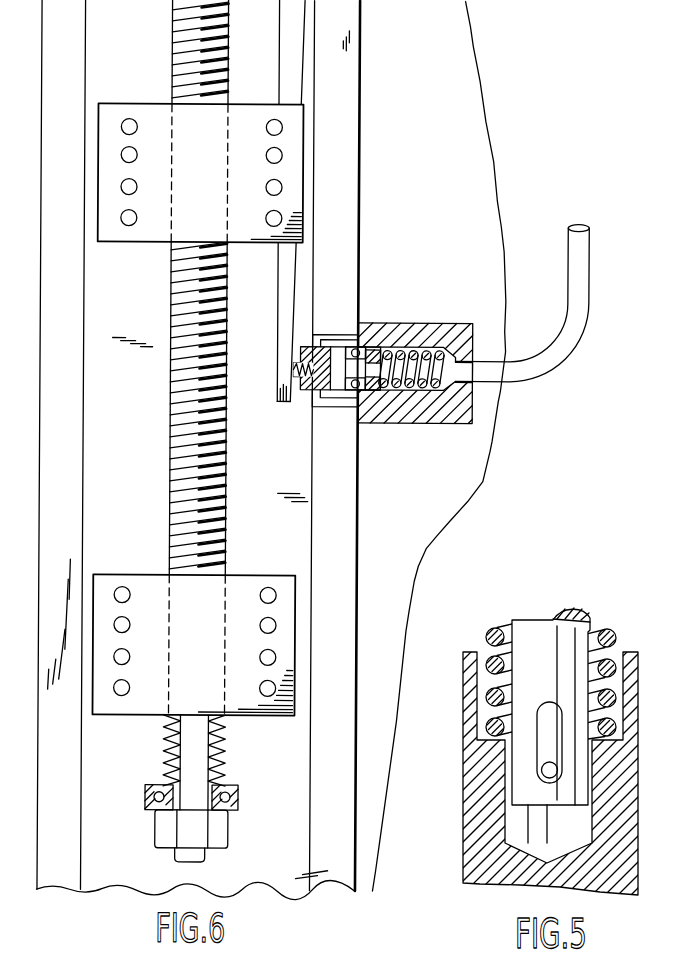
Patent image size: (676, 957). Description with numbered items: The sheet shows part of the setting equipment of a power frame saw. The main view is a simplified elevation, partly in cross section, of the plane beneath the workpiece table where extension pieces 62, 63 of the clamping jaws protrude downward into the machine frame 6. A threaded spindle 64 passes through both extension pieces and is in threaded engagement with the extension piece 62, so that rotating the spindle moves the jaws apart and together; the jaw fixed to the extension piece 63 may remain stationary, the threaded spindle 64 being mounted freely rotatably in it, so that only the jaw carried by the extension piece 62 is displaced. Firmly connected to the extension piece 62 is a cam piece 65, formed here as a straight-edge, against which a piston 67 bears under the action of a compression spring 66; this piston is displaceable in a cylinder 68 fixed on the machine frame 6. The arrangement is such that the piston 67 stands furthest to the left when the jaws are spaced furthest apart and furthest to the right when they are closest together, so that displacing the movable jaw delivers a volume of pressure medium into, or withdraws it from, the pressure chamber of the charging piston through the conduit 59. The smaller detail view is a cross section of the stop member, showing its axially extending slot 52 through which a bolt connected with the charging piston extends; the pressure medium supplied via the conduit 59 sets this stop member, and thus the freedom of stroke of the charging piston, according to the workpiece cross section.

In FIG. 6, the machine frame 6 is at (333, 24).
In FIG. 6, the extension piece 62 is at (290, 176).
In FIG. 6, the extension piece 63 is at (147, 697).
In FIG. 6, the threaded spindle 64 is at (224, 468).
In FIG. 6, the cam piece 65 is at (285, 272).
In FIG. 6, the compression spring 66 is at (440, 383).
In FIG. 6, the piston 67 is at (332, 388).
In FIG. 6, the cylinder 68 is at (440, 401).
In FIG. 6, the conduit 59 is at (573, 324).
In FIG. 5, the slot 52 is at (545, 711).